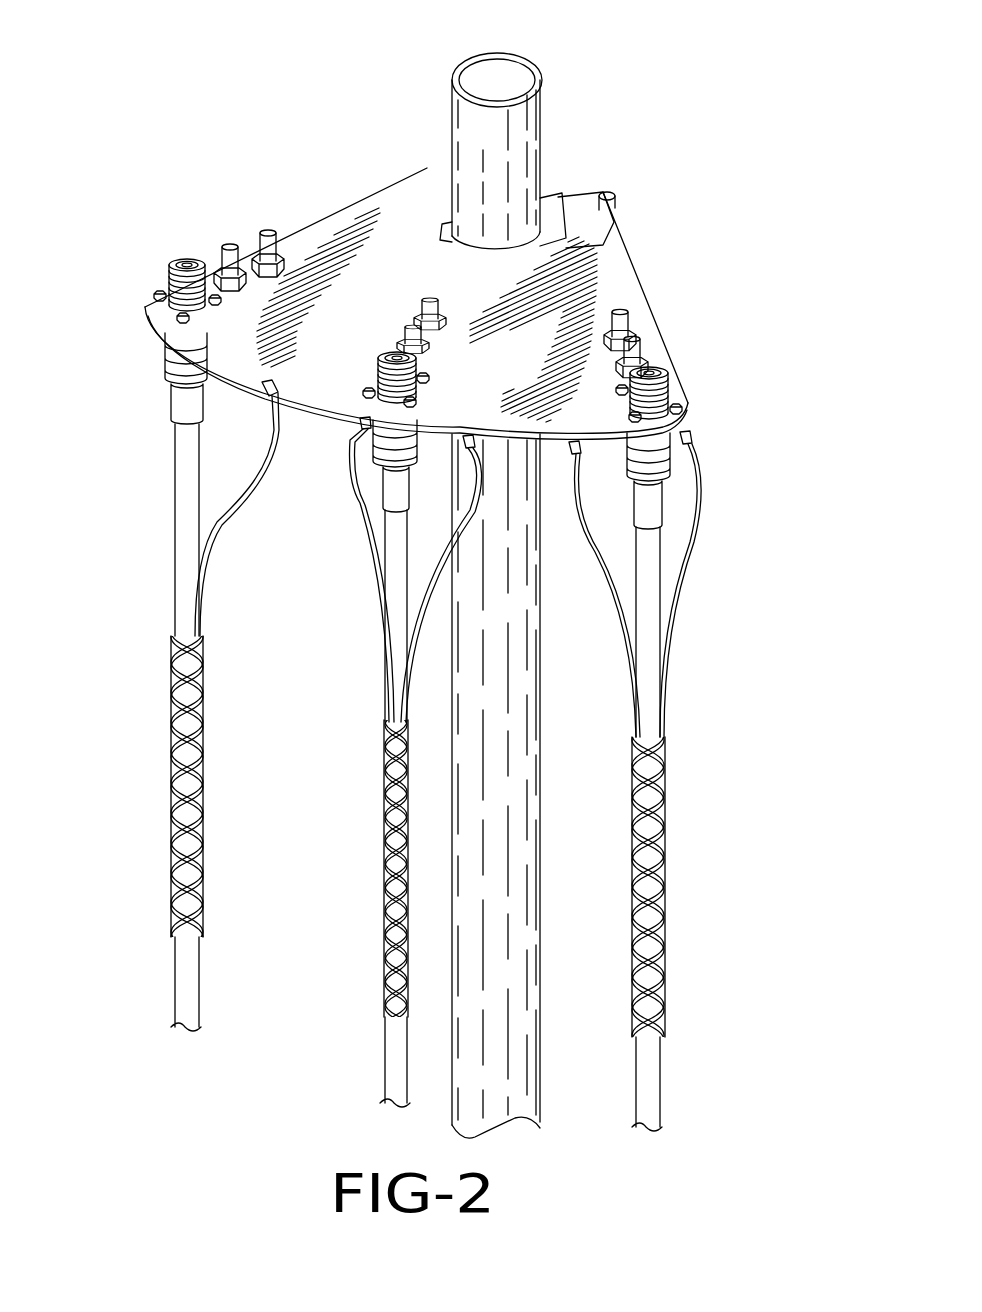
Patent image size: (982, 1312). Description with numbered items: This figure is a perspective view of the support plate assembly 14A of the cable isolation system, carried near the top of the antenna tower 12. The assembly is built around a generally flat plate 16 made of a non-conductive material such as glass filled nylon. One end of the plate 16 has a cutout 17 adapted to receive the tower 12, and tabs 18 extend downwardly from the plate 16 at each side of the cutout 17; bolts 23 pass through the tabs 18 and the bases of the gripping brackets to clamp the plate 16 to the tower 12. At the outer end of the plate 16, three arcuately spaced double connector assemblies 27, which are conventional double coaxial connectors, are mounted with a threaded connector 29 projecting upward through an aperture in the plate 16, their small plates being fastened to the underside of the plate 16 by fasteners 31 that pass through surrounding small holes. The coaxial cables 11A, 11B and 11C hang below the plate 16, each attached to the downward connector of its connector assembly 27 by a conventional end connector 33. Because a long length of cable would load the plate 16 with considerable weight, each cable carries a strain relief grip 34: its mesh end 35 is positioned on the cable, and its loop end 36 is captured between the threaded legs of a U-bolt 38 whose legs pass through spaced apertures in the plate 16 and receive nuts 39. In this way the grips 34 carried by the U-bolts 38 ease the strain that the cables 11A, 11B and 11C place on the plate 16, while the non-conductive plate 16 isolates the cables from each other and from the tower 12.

The support plate assembly 14A is at (257, 112).
The antenna tower 12 is at (476, 130).
The plate 16 is at (606, 258).
The cutout 17 is at (548, 197).
The tabs 18 is at (613, 223).
The bolts 23 is at (615, 193).
The double connector assembly 27 is at (438, 336).
The threaded connector 29 is at (183, 293).
The fasteners 31 is at (157, 298).
The end connectors 33 is at (178, 350).
The strain relief grip 34 is at (445, 755).
The mesh end 35 is at (173, 790).
The loop end 36 is at (222, 525).
The U-bolt 38 is at (268, 240).
The nuts 39 is at (223, 277).
The coaxial cable 11A is at (183, 990).
The coaxial cable 11B is at (396, 1055).
The coaxial cable 11C is at (645, 1077).